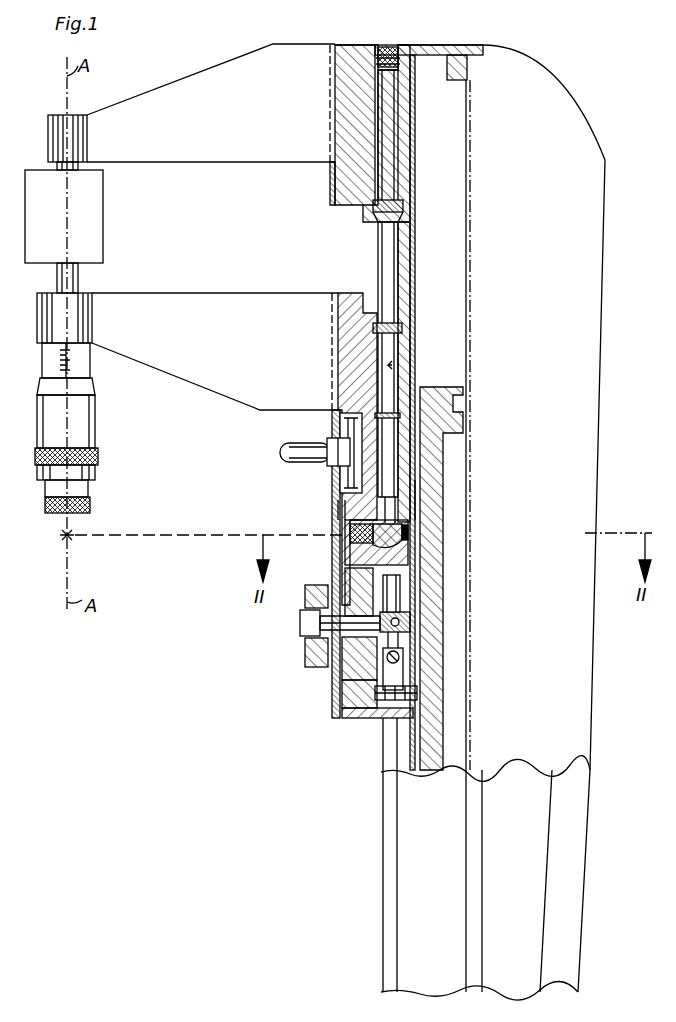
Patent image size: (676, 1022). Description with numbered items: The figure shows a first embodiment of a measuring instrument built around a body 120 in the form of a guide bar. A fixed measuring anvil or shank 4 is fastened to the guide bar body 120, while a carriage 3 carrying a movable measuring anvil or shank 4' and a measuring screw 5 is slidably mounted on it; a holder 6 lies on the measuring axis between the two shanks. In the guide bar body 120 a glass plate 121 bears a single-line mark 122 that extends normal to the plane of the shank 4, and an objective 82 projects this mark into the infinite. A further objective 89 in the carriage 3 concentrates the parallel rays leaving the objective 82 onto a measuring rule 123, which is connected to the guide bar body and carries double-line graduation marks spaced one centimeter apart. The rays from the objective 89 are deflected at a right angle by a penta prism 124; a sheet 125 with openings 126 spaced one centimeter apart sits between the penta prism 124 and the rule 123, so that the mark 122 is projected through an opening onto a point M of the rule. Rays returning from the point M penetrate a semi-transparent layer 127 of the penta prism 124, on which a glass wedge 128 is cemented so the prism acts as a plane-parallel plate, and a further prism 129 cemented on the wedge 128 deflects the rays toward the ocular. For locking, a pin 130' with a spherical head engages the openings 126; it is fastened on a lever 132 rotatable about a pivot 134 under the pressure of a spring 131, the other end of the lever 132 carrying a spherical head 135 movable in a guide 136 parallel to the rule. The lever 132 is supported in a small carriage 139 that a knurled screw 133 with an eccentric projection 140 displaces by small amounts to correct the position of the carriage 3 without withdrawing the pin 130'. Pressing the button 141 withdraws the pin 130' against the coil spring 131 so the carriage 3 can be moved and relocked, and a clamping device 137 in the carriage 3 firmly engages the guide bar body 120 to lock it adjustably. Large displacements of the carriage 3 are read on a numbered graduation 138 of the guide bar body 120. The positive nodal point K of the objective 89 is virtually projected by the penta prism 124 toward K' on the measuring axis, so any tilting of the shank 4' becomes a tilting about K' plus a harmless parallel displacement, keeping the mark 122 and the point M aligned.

The carriage 3 is at (352, 382).
The fixed measuring anvil or shank 4 is at (191, 107).
The movable measuring anvil or shank 4' is at (215, 337).
The measuring screw 5 is at (75, 424).
The holder block 6 is at (85, 215).
The objective 82 is at (370, 222).
The objective 89 is at (375, 326).
The guide bar body 120 is at (355, 57).
The glass plate 121 is at (402, 47).
The single-line mark 122 is at (388, 47).
The measuring rule 123 is at (432, 452).
The penta prism 124 is at (390, 550).
The sheet 125 is at (415, 340).
The openings 126 is at (413, 500).
The semi-transparent layer 127 is at (348, 556).
The glass wedge 128 is at (372, 542).
The prism 129 is at (338, 520).
The pin 130' is at (448, 700).
The spring 131 is at (380, 718).
The lever 132 is at (405, 672).
The knurled screw 133 is at (312, 650).
The pivot 134 is at (400, 657).
The spherical head 135 is at (393, 612).
The guide 136 is at (405, 625).
The clamping device 137 is at (322, 463).
The numbered graduation 138 is at (445, 905).
The carriage 139 is at (360, 695).
The eccentric projection 140 is at (365, 650).
The button 141 is at (300, 623).
The positive nodal point K is at (410, 366).
The projected nodal point K' is at (81, 548).
The measuring point M is at (410, 533).